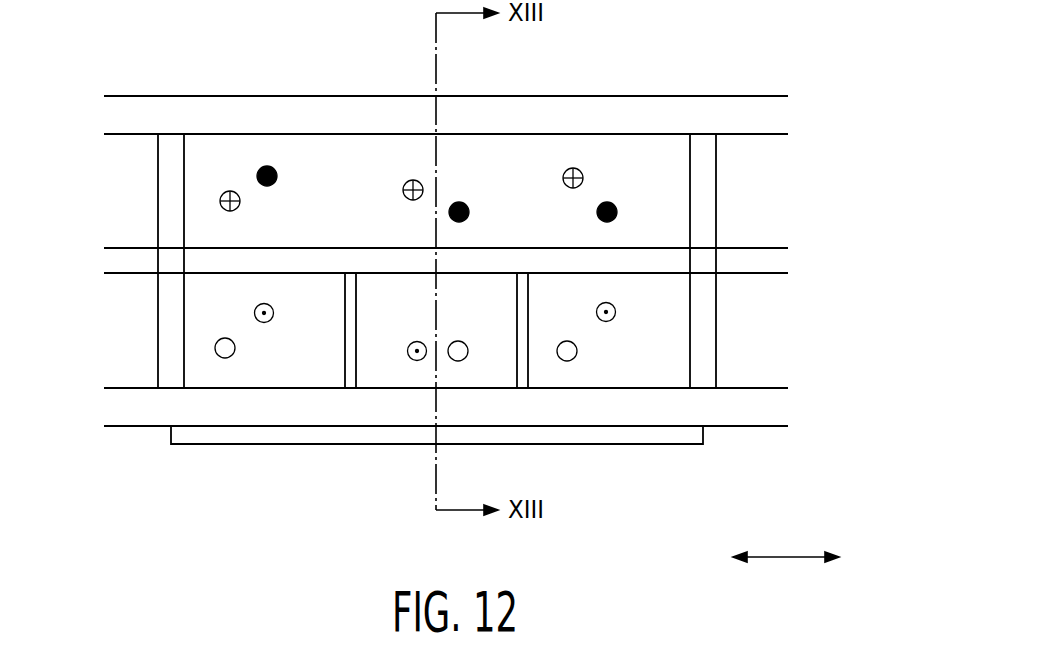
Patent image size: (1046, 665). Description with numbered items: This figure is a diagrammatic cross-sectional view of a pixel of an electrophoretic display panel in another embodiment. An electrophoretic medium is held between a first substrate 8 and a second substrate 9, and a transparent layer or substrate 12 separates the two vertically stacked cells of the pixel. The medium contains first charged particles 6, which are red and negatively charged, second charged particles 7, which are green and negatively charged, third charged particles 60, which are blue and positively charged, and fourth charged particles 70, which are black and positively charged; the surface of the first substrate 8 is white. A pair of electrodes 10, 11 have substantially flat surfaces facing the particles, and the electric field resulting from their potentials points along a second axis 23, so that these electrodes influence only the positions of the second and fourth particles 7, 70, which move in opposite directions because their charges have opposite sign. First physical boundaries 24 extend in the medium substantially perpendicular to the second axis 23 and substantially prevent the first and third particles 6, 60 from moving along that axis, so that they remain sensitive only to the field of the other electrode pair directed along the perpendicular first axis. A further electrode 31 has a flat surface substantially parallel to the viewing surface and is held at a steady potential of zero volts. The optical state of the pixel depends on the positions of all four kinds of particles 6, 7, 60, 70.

The first charged particles 6 is at (225, 358).
The second charged particles 7 is at (266, 165).
The first substrate 8 is at (120, 405).
The second substrate 9 is at (126, 113).
The electrode 10 is at (170, 367).
The electrode 11 is at (703, 373).
The transparent layer or substrate 12 is at (120, 258).
The second axis 23 is at (786, 546).
The first physical boundaries 24 is at (348, 375).
The electrode 31 is at (628, 435).
The third charged particles 60 is at (616, 311).
The fourth charged particles 70 is at (576, 167).